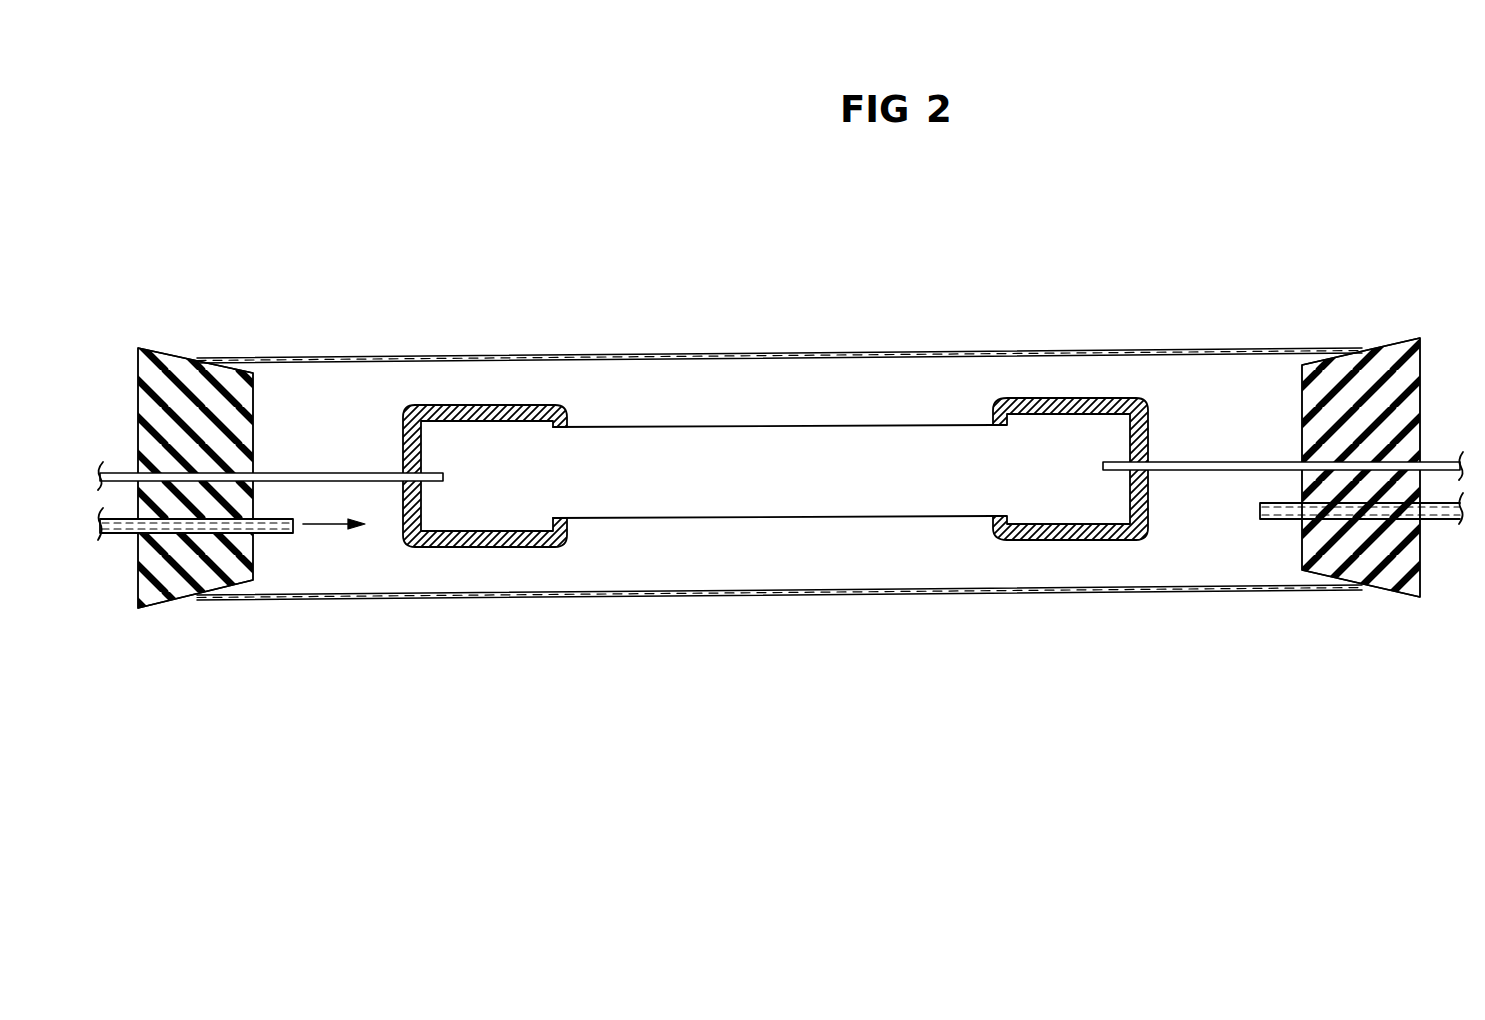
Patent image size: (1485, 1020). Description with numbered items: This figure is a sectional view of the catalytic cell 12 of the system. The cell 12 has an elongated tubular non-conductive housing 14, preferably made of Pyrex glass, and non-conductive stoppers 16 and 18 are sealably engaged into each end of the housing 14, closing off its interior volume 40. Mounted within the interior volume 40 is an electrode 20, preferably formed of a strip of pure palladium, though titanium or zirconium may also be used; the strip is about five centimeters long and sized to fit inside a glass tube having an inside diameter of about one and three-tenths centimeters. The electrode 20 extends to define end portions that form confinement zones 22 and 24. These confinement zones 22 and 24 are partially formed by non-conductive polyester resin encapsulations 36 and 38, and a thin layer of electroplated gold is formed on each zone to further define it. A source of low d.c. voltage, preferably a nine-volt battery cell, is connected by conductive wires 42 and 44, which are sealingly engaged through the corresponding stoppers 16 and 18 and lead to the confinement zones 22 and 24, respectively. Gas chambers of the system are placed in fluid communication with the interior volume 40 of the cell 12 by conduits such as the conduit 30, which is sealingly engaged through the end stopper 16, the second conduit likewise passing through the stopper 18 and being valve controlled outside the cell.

The catalytic cell 12 is at (828, 352).
The elongated tubular non-conductive housing 14 is at (963, 352).
The non-conductive stopper 16 is at (252, 406).
The non-conductive stopper 18 is at (1301, 398).
The electrode 20 is at (673, 425).
The confinement zone 22 is at (933, 473).
The confinement zone 24 is at (1110, 466).
The conduit 30 is at (266, 537).
The non-conductive polyester resin encapsulation 36 is at (462, 405).
The non-conductive polyester resin encapsulation 38 is at (1082, 541).
The interior volume 40 is at (845, 562).
The conductive wire 42 is at (338, 467).
The conductive wire 44 is at (1223, 470).